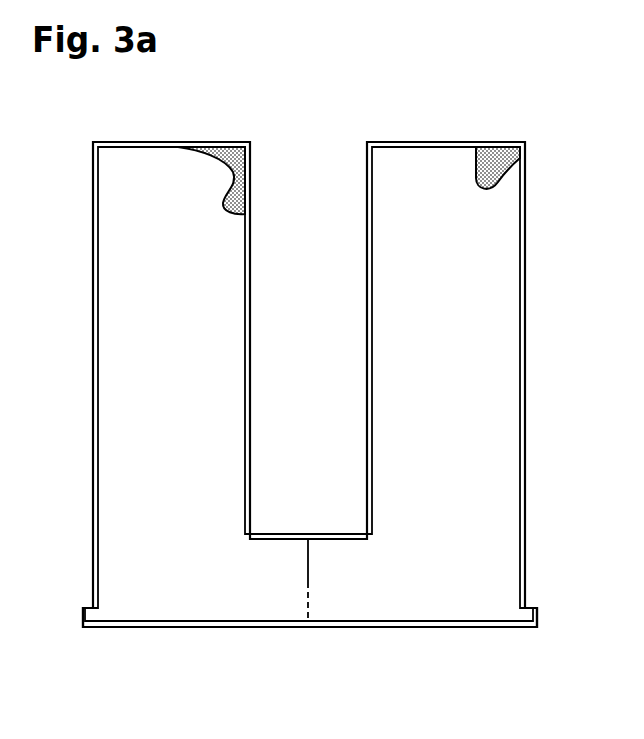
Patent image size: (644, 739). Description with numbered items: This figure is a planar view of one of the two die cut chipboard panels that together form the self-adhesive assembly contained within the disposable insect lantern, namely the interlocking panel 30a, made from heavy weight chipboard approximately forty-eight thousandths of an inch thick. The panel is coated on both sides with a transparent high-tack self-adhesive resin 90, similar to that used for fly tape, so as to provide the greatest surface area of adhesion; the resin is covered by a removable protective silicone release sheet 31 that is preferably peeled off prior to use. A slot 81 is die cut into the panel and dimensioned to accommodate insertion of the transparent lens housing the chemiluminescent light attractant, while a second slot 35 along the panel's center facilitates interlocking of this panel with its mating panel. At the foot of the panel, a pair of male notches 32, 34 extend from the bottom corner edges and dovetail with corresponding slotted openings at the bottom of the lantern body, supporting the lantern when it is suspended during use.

The protective silicone release sheet 31 is at (140, 407).
The slot 81 is at (253, 307).
The self-adhesive resin 90 is at (507, 168).
The slot 35 is at (308, 556).
The interlocking panel 30a is at (309, 582).
The male notch 32 is at (83, 622).
The male notch 34 is at (535, 620).